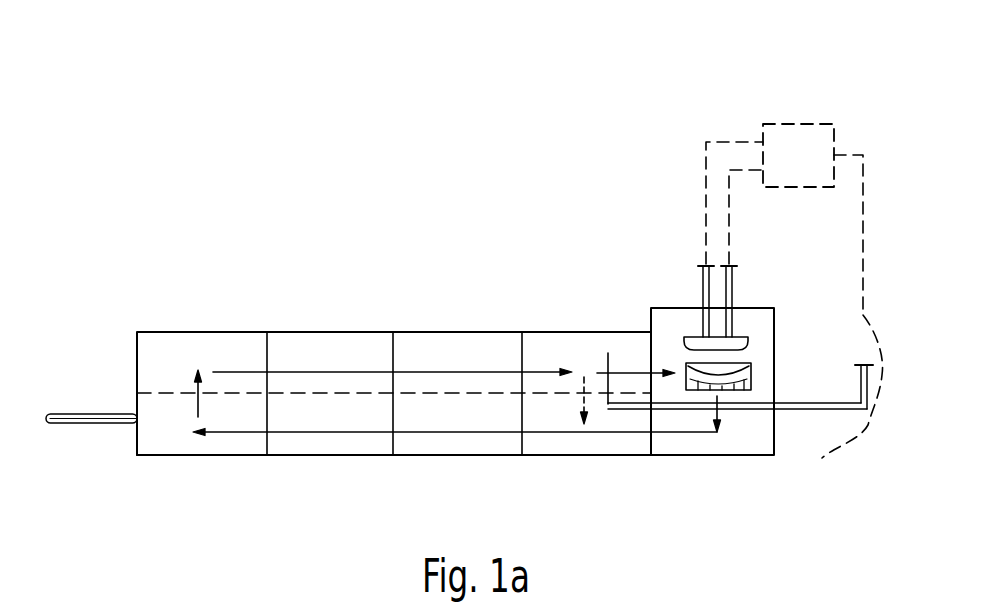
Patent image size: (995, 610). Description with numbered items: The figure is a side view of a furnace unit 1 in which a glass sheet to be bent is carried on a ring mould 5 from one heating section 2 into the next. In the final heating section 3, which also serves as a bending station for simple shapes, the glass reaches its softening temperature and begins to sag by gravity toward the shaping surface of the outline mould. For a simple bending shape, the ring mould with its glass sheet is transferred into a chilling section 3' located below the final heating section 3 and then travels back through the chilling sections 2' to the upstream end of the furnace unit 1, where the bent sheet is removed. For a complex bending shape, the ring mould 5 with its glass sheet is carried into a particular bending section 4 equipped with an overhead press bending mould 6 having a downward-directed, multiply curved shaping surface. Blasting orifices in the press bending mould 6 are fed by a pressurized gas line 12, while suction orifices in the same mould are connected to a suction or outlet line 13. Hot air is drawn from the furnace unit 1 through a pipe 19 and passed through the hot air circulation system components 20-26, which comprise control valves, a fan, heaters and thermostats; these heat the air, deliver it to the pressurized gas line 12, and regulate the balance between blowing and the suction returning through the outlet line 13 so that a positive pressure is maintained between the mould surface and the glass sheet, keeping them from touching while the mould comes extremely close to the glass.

The furnace unit 1 is at (145, 320).
The heating section 2 is at (347, 369).
The chilling section 2' is at (329, 476).
The final heating section 3 is at (553, 367).
The chilling section 3' is at (586, 476).
The bending section for complex shapes 4 is at (658, 319).
The ring mould 5 is at (764, 371).
The press bending mould 6 is at (740, 324).
The pressurized gas line 12 is at (703, 291).
The suction or outlet line 13 is at (732, 283).
The pipe 19 is at (810, 411).
The hot air circulation system components 20-26 is at (792, 130).